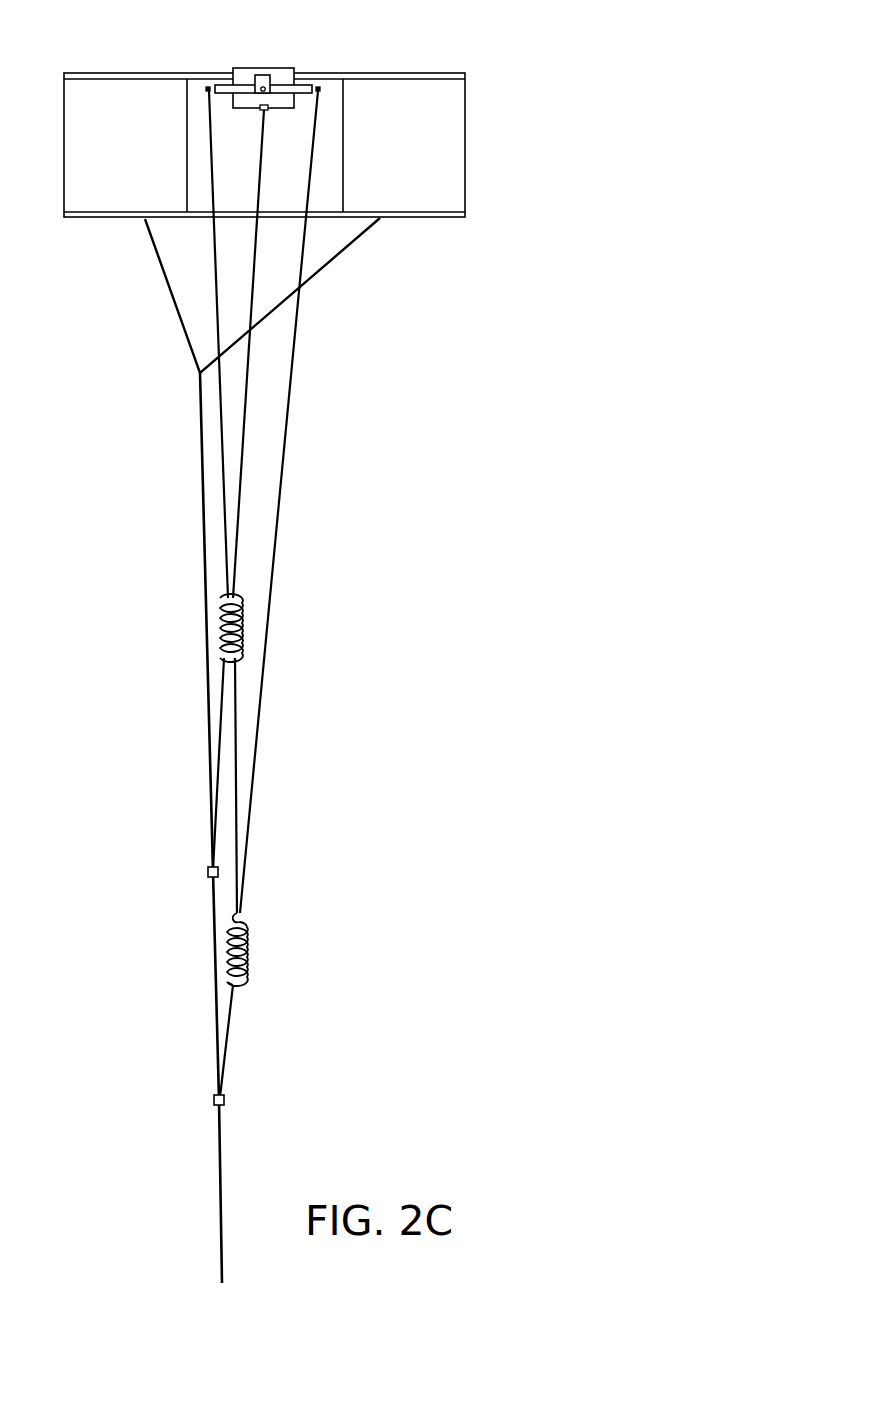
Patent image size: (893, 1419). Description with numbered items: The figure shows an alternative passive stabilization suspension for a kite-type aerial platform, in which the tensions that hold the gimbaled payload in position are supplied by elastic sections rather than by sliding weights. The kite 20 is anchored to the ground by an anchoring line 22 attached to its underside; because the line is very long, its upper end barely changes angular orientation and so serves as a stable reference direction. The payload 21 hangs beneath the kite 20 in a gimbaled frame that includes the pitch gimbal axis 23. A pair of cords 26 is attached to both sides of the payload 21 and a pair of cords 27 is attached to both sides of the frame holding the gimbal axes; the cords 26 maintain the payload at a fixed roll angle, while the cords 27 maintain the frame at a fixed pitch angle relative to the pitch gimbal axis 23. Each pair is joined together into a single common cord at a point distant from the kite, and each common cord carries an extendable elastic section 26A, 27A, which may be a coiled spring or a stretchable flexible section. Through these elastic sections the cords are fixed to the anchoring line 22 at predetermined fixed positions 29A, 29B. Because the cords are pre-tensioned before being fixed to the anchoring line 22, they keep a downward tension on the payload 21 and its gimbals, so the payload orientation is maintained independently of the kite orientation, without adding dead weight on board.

The kite 20 is at (465, 140).
The payload 21 is at (242, 72).
The anchoring line 22 is at (200, 452).
The pitch gimbal axis 23 is at (263, 68).
The cords 26 is at (248, 390).
The extendable elastic section 26A is at (242, 618).
The cords 27 is at (285, 455).
The extendable elastic section 27A is at (248, 962).
The fixed position 29A is at (225, 1094).
The fixed position 29B is at (208, 870).